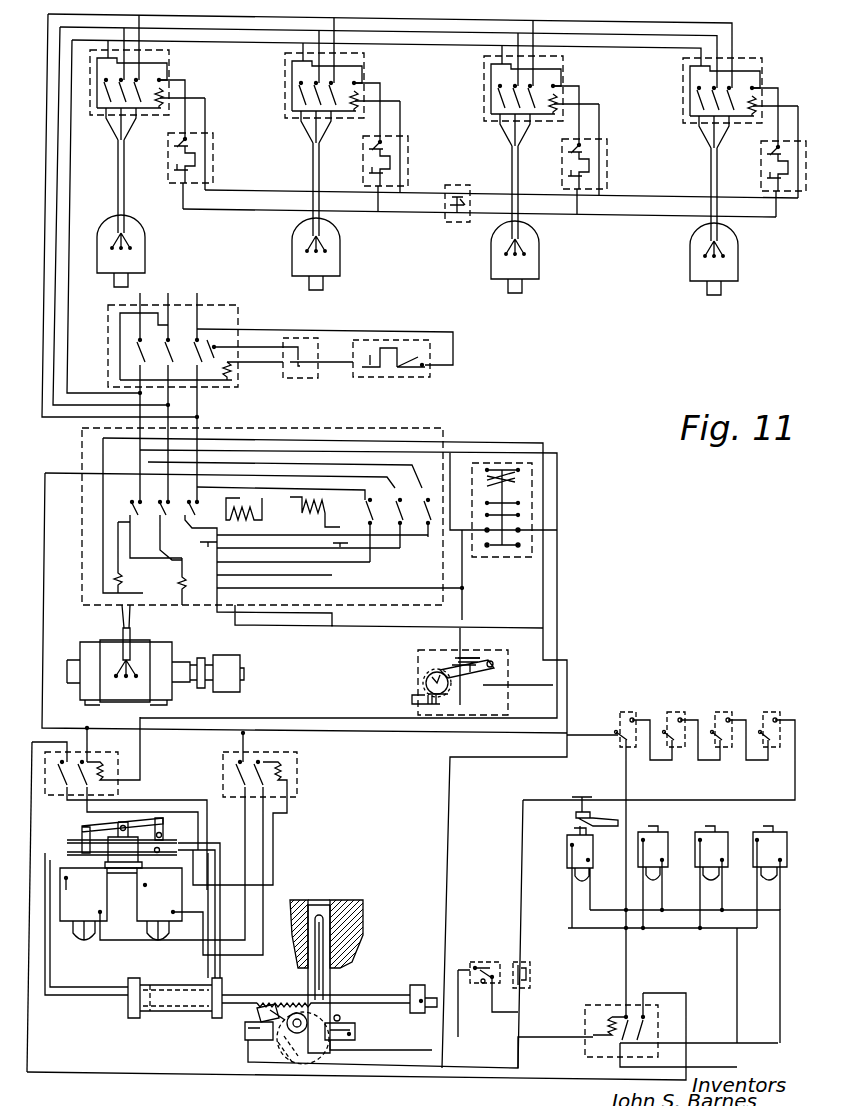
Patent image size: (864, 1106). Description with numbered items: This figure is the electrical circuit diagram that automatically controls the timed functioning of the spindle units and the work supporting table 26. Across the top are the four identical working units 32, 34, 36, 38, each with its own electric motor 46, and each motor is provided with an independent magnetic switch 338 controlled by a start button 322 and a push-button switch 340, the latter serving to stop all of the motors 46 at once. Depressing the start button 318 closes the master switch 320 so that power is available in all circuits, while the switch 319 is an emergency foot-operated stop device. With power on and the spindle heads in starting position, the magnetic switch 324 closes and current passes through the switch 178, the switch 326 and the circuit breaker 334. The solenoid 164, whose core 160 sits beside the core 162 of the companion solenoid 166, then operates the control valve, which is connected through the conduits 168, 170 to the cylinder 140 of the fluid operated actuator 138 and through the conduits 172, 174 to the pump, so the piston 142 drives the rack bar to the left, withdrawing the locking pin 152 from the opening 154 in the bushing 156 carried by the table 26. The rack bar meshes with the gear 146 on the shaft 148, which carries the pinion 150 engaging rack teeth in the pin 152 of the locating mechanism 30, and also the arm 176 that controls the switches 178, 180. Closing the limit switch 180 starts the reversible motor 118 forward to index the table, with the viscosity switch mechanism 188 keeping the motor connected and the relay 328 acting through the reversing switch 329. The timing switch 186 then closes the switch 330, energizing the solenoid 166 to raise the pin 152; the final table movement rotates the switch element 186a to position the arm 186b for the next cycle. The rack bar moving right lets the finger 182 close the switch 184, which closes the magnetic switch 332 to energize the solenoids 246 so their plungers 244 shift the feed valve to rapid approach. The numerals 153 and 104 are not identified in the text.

The magnetic switch 338 is at (184, 77).
The start button 322 is at (208, 150).
The electric motor 46 is at (142, 247).
The working unit 32 is at (157, 272).
The working unit 34 is at (357, 281).
The working unit 36 is at (545, 290).
The working unit 38 is at (753, 292).
The push-button switch 340 is at (455, 233).
The master switch 320 is at (250, 300).
The start button 318 is at (410, 358).
The stop button 319 is at (296, 378).
The reversing switch 329 is at (406, 442).
The relay 328 is at (540, 511).
The reversible electric motor 118 is at (112, 642).
The viscosity switch mechanism 188 is at (242, 688).
The timing switch 186 is at (489, 667).
The switch element 186a is at (426, 683).
The arm 186b is at (425, 660).
The switch 330 is at (126, 769).
The magnetic switch 324 is at (303, 782).
The switch 326 is at (759, 708).
The circuit breaker 334 is at (566, 793).
The solenoids 246 is at (565, 850).
The plungers 244 is at (572, 880).
The lever 153 is at (130, 845).
The conduit 172 is at (68, 840).
The conduit 174 is at (166, 850).
The conduit 170 is at (216, 850).
The solenoid 164 is at (98, 894).
The solenoid 166 is at (159, 894).
The core 160 is at (84, 942).
The core 162 is at (156, 942).
The conduit 168 is at (50, 975).
The cylinder 140 is at (178, 985).
The piston 142 is at (157, 1020).
The fluid operated actuator 138 is at (175, 1028).
The rack 104 is at (238, 995).
The shaft 148 is at (296, 1012).
The arm 176 is at (252, 1016).
The switch 178 is at (252, 1034).
The gear 146 is at (280, 1050).
The pinion 150 is at (308, 1062).
The switch 180 is at (345, 1040).
The work supporting table 26 is at (290, 905).
The opening 154 is at (325, 905).
The bushing 156 is at (358, 912).
The locking pin 152 is at (324, 930).
The locating mechanism 30 is at (351, 985).
The finger 182 is at (416, 985).
The switch 184 is at (490, 990).
The magnetic switch 332 is at (609, 998).